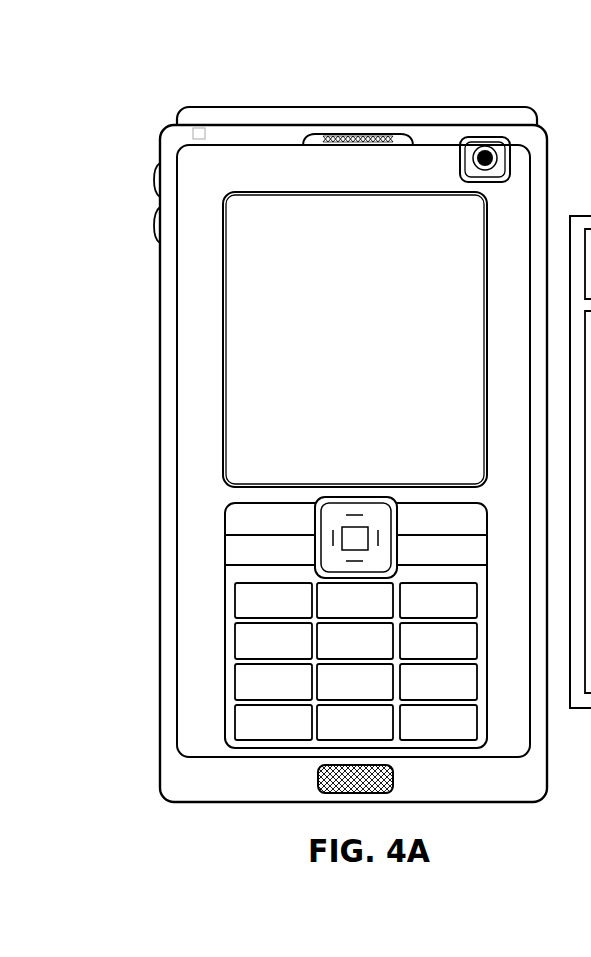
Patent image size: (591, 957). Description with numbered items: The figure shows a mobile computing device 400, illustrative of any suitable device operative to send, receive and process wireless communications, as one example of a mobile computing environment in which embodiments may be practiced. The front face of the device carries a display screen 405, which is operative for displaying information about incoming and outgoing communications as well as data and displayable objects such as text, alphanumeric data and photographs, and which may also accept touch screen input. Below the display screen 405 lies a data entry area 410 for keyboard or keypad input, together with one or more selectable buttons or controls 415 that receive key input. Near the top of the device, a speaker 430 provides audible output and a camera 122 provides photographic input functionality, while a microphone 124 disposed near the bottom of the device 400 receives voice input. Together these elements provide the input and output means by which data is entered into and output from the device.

The mobile computing device 400 is at (150, 128).
The display screen 405 is at (258, 322).
The data entry area 410 is at (225, 548).
The selectable buttons or controls 415 is at (248, 641).
The speaker 430 is at (362, 137).
The camera 122 is at (488, 156).
The microphone 124 is at (317, 784).